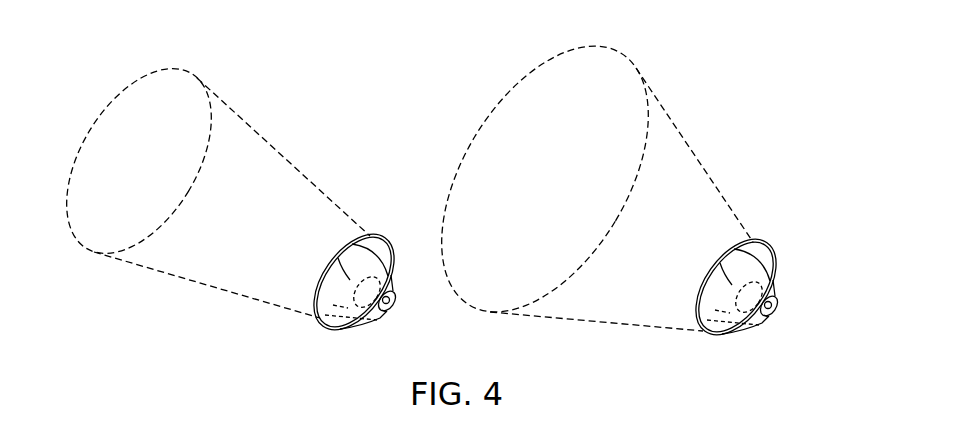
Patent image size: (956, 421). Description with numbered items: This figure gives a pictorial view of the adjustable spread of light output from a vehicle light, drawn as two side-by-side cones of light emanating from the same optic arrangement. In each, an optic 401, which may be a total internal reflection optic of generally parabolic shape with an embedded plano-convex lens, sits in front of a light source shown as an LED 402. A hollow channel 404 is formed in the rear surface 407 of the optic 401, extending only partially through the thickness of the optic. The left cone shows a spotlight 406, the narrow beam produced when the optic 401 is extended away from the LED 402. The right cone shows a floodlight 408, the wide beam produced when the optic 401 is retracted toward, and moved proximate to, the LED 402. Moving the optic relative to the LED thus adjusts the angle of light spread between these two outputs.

The optic 401 is at (327, 265).
The LED 402 is at (394, 305).
The hollow channel 404 is at (388, 284).
The spotlight 406 is at (142, 77).
The rear surface 407 is at (381, 318).
The floodlight 408 is at (545, 62).